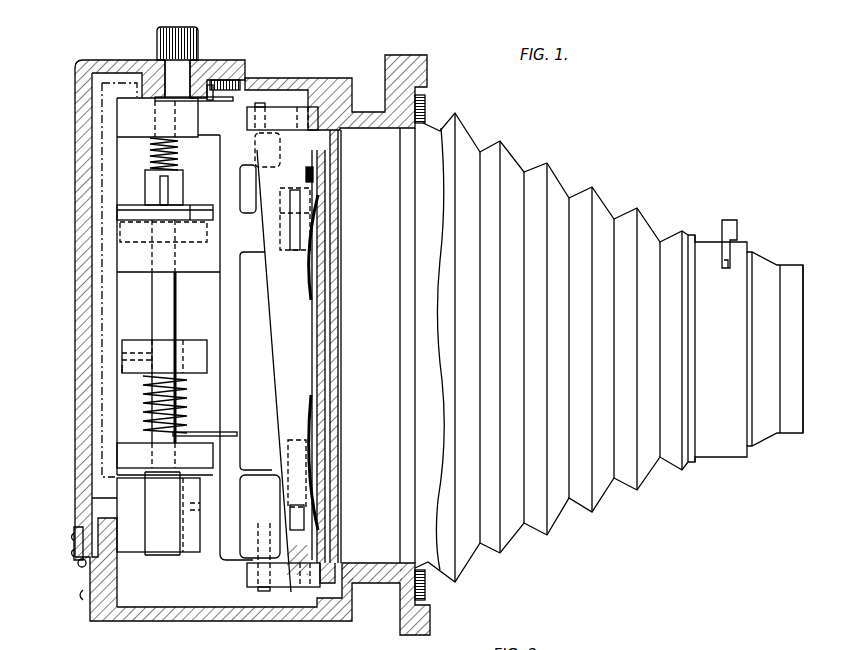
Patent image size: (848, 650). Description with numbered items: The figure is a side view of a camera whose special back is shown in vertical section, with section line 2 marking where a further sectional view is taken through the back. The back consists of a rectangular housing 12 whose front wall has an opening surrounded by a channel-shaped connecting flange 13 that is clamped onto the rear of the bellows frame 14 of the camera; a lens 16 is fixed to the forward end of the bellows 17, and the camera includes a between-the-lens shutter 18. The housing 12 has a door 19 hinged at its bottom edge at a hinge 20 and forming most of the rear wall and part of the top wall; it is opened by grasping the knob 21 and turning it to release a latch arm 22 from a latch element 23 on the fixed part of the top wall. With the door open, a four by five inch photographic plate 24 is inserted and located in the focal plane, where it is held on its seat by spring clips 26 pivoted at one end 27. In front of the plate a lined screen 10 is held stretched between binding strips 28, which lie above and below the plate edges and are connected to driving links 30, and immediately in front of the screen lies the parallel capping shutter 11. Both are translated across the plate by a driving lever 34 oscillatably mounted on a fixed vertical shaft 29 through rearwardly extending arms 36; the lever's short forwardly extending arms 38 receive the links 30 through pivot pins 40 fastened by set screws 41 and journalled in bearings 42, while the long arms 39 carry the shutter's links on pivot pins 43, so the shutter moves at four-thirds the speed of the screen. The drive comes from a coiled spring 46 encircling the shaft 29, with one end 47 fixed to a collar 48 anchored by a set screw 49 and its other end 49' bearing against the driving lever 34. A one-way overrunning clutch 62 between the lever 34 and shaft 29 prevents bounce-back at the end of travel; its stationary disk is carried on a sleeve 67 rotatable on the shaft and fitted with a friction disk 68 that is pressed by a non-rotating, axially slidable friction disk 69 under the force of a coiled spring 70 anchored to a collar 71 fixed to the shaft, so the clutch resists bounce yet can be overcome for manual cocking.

The section line 2- 2 is at (56, 86).
The lined screen 10 is at (333, 312).
The capping shutter 11 is at (339, 289).
The rectangular housing 12 is at (272, 617).
The channel-shaped connecting flange 13 is at (370, 508).
The bellows frame 14 is at (431, 618).
The lens 16 is at (794, 432).
The bellows 17 is at (600, 490).
The between-the-lens shutter 18 is at (716, 450).
The door 19 is at (75, 433).
The hinge 20 is at (79, 566).
The knob 21 is at (160, 30).
The latch arm 22 is at (208, 102).
The latch element 23 is at (228, 84).
The photographic plate 24 is at (318, 342).
The spring clips 26 is at (311, 285).
The pivot end 27 is at (306, 174).
The binding strips 28 is at (330, 78).
The fixed shaft 29 is at (152, 295).
The driving links 30 is at (288, 491).
The driving lever 34 is at (240, 320).
The rearwardly extending arms 36 is at (191, 271).
The short forwardly extending arms 38 is at (247, 150).
The long forwardly extending arms 39 is at (258, 361).
The pivot pins 40 is at (259, 103).
The set screws 41 is at (250, 578).
The bearings 42 is at (292, 250).
The pivot pins 43 is at (295, 432).
The coiled spring 46 is at (186, 403).
The spring end 47 is at (188, 341).
The collar 48 is at (127, 373).
The set screw 49 is at (136, 337).
The lever arm 49' is at (205, 430).
The one-way overrunning clutch 62 is at (119, 232).
The sleeve 67 is at (182, 273).
The friction disk 68 is at (194, 209).
The friction disk 69 is at (131, 208).
The coiled spring 70 is at (150, 153).
The collar 71 is at (148, 178).